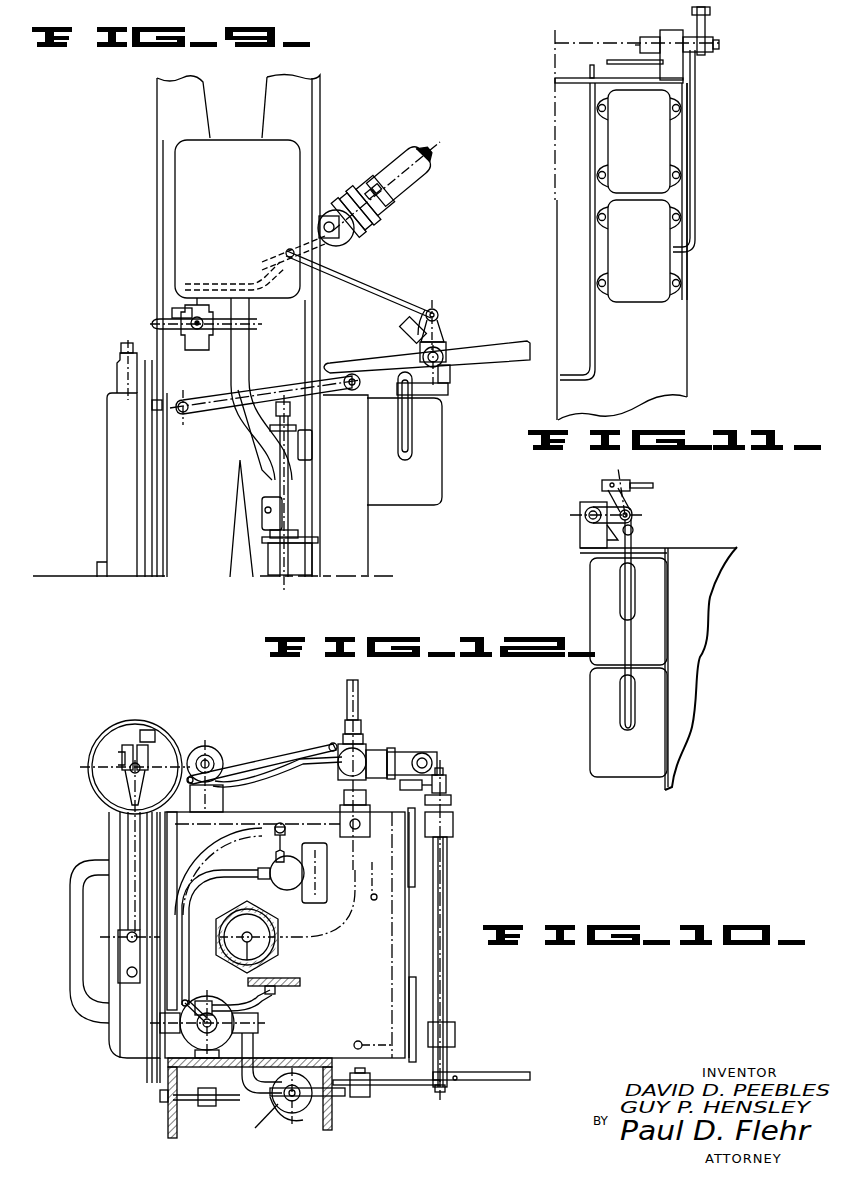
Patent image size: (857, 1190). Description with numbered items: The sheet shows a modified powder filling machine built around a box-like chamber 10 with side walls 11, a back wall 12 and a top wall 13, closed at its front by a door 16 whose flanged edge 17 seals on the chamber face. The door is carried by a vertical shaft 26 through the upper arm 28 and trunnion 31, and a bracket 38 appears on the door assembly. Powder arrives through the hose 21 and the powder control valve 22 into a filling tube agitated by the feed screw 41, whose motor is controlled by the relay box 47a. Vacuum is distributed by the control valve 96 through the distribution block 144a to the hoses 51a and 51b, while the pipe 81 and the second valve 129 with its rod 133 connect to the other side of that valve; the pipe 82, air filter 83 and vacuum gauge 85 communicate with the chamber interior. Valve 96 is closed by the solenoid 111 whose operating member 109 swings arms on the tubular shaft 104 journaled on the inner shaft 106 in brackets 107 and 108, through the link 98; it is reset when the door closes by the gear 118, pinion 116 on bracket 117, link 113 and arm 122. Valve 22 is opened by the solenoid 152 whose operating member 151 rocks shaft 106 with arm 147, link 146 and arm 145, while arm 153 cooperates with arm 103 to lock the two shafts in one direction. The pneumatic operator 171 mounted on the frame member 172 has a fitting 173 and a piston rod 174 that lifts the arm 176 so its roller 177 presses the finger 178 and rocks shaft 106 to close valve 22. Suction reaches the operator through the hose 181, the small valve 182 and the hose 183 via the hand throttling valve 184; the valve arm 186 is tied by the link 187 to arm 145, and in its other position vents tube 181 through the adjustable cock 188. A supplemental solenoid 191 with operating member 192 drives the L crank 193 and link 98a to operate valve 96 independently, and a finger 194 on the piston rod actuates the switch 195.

In FIG. 9, the chamber 10 is at (368, 553).
In FIG. 11, the chamber 10 is at (690, 328).
In FIG. 12, the chamber 10 is at (711, 606).
In FIG. 12, the side walls 11 is at (702, 637).
In FIG. 11, the back wall 12 is at (682, 366).
In FIG. 9, the top wall 13 is at (445, 395).
In FIG. 11, the top wall 13 is at (566, 78).
In FIG. 12, the top wall 13 is at (582, 550).
In FIG. 9, the door 16 is at (112, 488).
In FIG. 10, the door 16 is at (109, 1036).
In FIG. 9, the flanged edge 17 is at (138, 452).
In FIG. 10, the flanged edge 17 is at (145, 1073).
In FIG. 9, the hose 21 is at (408, 172).
In FIG. 9, the valve 22 is at (352, 235).
In FIG. 10, the vertical shaft 26 is at (130, 770).
In FIG. 9, the upper arm 28 is at (117, 365).
In FIG. 10, the upper arm 28 is at (128, 840).
In FIG. 9, the trunnion 31 is at (120, 349).
In FIG. 10, the trunnion 31 is at (120, 940).
In FIG. 9, the bracket 38 is at (82, 569).
In FIG. 10, the bracket 38 is at (72, 1012).
In FIG. 10, the feed screw 41 is at (272, 936).
In FIG. 9, the relay or switch box 47a is at (178, 170).
In FIG. 10, the distributing hose 51a is at (200, 937).
In FIG. 10, the distributing hose 51b is at (340, 920).
In FIG. 10, the pipe 81 is at (358, 695).
In FIG. 11, the pipe 82 is at (598, 350).
In FIG. 10, the air filter 83 is at (318, 863).
In FIG. 10, the vacuum gauge 85 is at (300, 893).
In FIG. 10, the control valve 96 is at (366, 750).
In FIG. 11, the link 98 is at (706, 13).
In FIG. 12, the link 98a is at (632, 478).
In FIG. 10, the link 98a is at (403, 794).
In FIG. 9, the arm 103 is at (405, 330).
In FIG. 10, the tubular shaft 104 is at (447, 900).
In FIG. 9, the shaft 106 is at (442, 352).
In FIG. 11, the shaft 106 is at (632, 38).
In FIG. 12, the shaft 106 is at (585, 512).
In FIG. 10, the shaft 106 is at (447, 982).
In FIG. 11, the journal bracket 107 is at (668, 30).
In FIG. 12, the journal bracket 107 is at (582, 535).
In FIG. 10, the journal bracket 107 is at (453, 822).
In FIG. 9, the journal bracket 108 is at (445, 380).
In FIG. 10, the journal bracket 108 is at (455, 1032).
In FIG. 11, the operating member 109 is at (686, 125).
In FIG. 10, the operating member 109 is at (416, 880).
In FIG. 11, the solenoid 111 is at (665, 152).
In FIG. 12, the solenoid 111 is at (590, 597).
In FIG. 10, the link 113 is at (246, 756).
In FIG. 10, the pinion 116 is at (200, 745).
In FIG. 10, the bracket 117 is at (223, 803).
In FIG. 10, the gear 118 is at (90, 757).
In FIG. 10, the arm 122 is at (128, 785).
In FIG. 10, the second valve 129 is at (426, 752).
In FIG. 10, the rod 133 is at (275, 752).
In FIG. 10, the distribution block 144a is at (340, 810).
In FIG. 9, the arm 145 is at (285, 248).
In FIG. 10, the arm 145 is at (268, 975).
In FIG. 9, the operating link 146 is at (358, 290).
In FIG. 9, the arm 147 is at (440, 318).
In FIG. 9, the operating member 151 is at (408, 440).
In FIG. 10, the operating member 151 is at (417, 1005).
In FIG. 9, the solenoid 152 is at (428, 470).
In FIG. 9, the arm 153 is at (414, 312).
In FIG. 9, the pneumatic operator 171 is at (268, 566).
In FIG. 10, the pneumatic operator 171 is at (298, 1113).
In FIG. 9, the vertical frame member 172 is at (157, 100).
In FIG. 10, the vertical frame member 172 is at (168, 1113).
In FIG. 9, the pipe connection 173 is at (250, 527).
In FIG. 9, the rod 174 is at (262, 443).
In FIG. 10, the rod 174 is at (262, 1132).
In FIG. 9, the arm 176 is at (272, 393).
In FIG. 10, the arm 176 is at (340, 1097).
In FIG. 9, the roller 177 is at (345, 392).
In FIG. 10, the roller 177 is at (370, 1090).
In FIG. 9, the finger 178 is at (335, 360).
In FIG. 10, the finger 178 is at (468, 1082).
In FIG. 9, the suction hose 181 is at (250, 338).
In FIG. 10, the suction hose 181 is at (248, 1108).
In FIG. 9, the valve 182 is at (168, 322).
In FIG. 10, the valve 182 is at (236, 1040).
In FIG. 10, the hose 183 is at (177, 985).
In FIG. 10, the hand throttling valve 184 is at (262, 866).
In FIG. 9, the operating arm 186 is at (197, 298).
In FIG. 10, the operating arm 186 is at (198, 990).
In FIG. 9, the link 187 is at (243, 296).
In FIG. 10, the link 187 is at (262, 1000).
In FIG. 9, the adjustable venting cock 188 is at (185, 352).
In FIG. 10, the adjustable venting cock 188 is at (208, 1108).
In FIG. 11, the supplemental solenoid 191 is at (668, 262).
In FIG. 12, the supplemental solenoid 191 is at (590, 735).
In FIG. 11, the operating member 192 is at (696, 203).
In FIG. 12, the operating member 192 is at (627, 692).
In FIG. 10, the operating member 192 is at (452, 800).
In FIG. 11, the L crank 193 is at (712, 33).
In FIG. 12, the L crank 193 is at (632, 500).
In FIG. 10, the L crank 193 is at (447, 788).
In FIG. 9, the finger 194 is at (296, 432).
In FIG. 9, the switch 195 is at (312, 452).